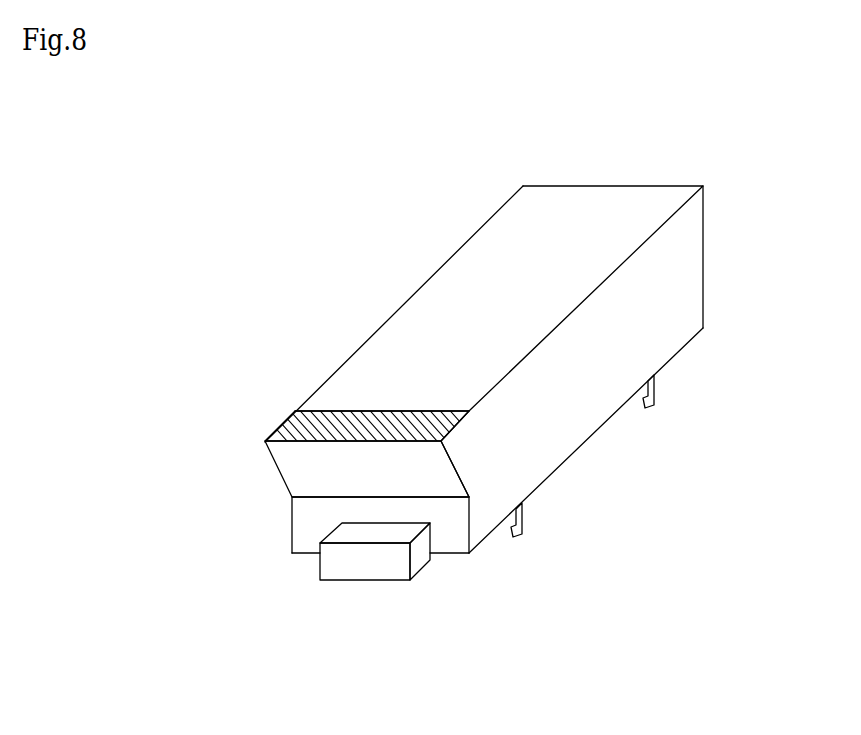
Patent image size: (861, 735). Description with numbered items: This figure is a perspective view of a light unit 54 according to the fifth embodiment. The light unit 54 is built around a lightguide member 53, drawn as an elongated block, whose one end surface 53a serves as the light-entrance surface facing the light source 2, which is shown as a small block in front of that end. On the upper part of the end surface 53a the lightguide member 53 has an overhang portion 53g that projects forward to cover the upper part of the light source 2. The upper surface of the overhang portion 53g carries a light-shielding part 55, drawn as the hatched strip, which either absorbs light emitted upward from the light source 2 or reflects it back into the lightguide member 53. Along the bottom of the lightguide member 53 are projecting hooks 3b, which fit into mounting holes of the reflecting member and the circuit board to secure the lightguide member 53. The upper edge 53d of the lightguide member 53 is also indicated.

The light unit 54 is at (713, 168).
The lightguide member 53 is at (341, 247).
The upper edge of case 53d is at (411, 275).
The light-shielding part 55 is at (283, 427).
The overhang portion 53g is at (317, 447).
The end surface 53a is at (453, 528).
The light source 2 is at (362, 565).
The projecting hooks 3b is at (650, 408).